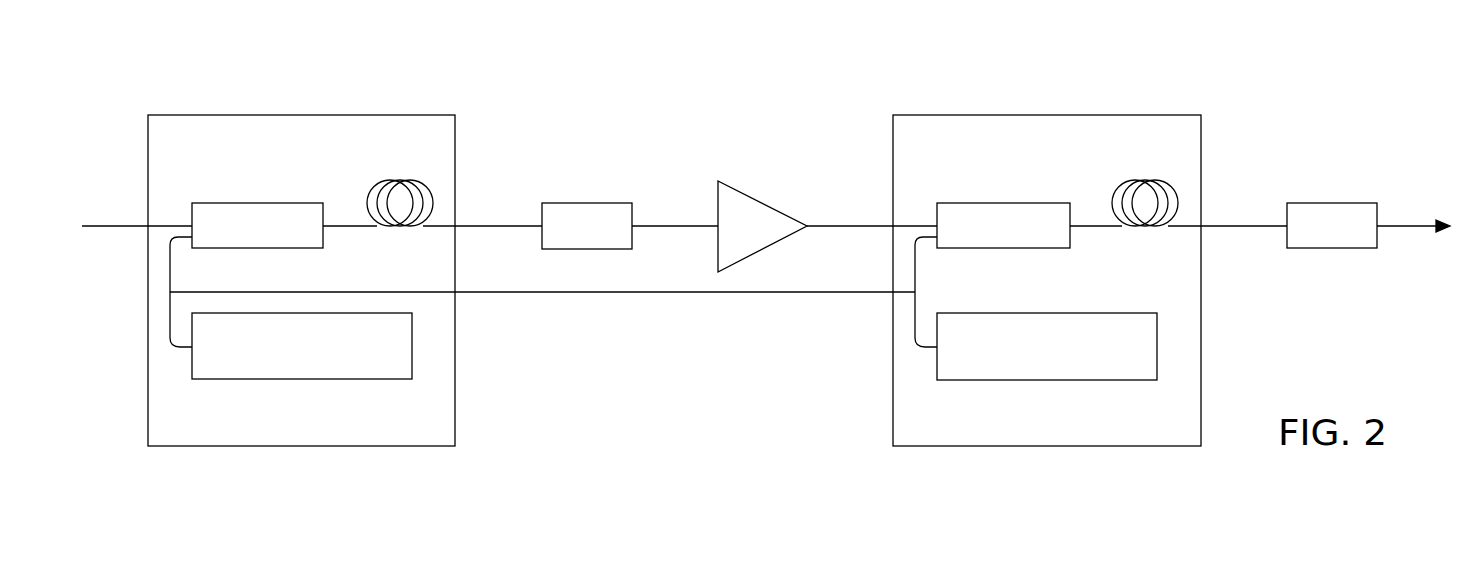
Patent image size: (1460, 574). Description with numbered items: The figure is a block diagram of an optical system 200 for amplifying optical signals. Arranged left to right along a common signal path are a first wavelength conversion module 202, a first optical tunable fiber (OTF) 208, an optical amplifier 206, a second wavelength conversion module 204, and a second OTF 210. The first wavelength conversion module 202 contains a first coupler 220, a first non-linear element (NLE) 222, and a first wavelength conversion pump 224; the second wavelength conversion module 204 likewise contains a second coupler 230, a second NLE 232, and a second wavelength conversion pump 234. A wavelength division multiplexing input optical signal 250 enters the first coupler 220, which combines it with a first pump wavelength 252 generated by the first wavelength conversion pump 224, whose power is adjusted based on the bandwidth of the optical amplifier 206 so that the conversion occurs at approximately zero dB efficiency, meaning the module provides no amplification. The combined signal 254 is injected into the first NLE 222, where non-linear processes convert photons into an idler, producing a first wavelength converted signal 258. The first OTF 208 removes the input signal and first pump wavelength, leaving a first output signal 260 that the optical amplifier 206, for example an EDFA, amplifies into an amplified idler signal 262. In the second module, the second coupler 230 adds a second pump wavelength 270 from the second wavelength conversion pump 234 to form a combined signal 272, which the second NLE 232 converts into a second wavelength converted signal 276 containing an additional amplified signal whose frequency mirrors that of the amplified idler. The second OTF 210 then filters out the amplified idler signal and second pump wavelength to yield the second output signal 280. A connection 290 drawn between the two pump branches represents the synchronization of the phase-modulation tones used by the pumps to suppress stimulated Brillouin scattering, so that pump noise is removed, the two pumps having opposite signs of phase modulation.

The optical system 200 is at (972, 58).
The first wavelength conversion module 202 is at (256, 113).
The second wavelength conversion module 204 is at (1104, 113).
The optical amplifier 206 is at (759, 200).
The first optical tunable fiber (OTF) 208 is at (588, 203).
The second OTF 210 is at (1332, 203).
The first coupler 220 is at (257, 203).
The first non-linear element (NLE) 222 is at (400, 180).
The first wavelength conversion pump 224 is at (302, 380).
The second coupler 230 is at (1003, 203).
The second NLE 232 is at (1145, 180).
The second wavelength conversion pump 234 is at (1047, 380).
The input optical signal 250 is at (113, 226).
The first pump wavelength 252 is at (170, 258).
The combined signal 254 is at (350, 226).
The first wavelength converted signal 258 is at (500, 226).
The first output signal 260 is at (675, 226).
The amplified idler signal 262 is at (850, 226).
The second pump wavelength 270 is at (915, 258).
The combined signal 272 is at (1098, 226).
The second wavelength converted signal 276 is at (1243, 226).
The second output signal 280 is at (1408, 226).
The connection 290 is at (673, 292).